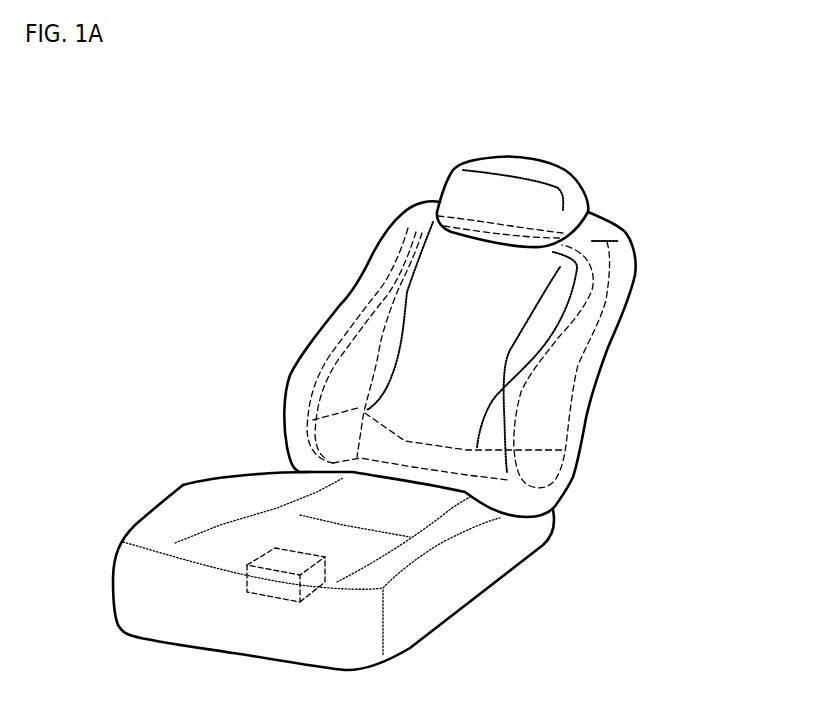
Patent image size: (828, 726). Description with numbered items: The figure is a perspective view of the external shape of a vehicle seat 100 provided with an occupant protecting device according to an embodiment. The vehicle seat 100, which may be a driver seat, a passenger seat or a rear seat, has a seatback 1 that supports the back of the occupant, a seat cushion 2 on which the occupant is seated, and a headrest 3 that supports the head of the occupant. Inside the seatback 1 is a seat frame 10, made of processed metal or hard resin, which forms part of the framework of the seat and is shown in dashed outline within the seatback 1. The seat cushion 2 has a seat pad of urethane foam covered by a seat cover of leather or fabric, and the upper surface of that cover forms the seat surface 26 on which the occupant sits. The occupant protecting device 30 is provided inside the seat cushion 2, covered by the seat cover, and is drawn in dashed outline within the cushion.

The vehicle seat 100 is at (192, 145).
The seatback 1 is at (636, 250).
The seat cushion 2 is at (184, 486).
The headrest 3 is at (535, 158).
The seat frame 10 is at (340, 362).
The seat surface 26 is at (219, 548).
The occupant protecting device 30 is at (280, 598).